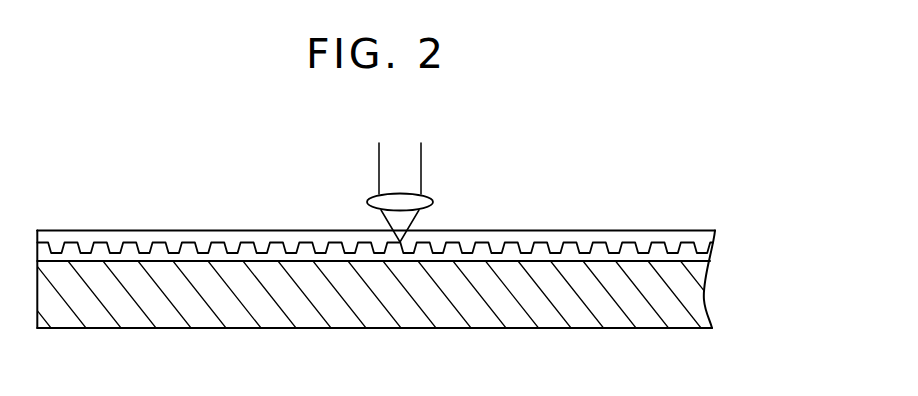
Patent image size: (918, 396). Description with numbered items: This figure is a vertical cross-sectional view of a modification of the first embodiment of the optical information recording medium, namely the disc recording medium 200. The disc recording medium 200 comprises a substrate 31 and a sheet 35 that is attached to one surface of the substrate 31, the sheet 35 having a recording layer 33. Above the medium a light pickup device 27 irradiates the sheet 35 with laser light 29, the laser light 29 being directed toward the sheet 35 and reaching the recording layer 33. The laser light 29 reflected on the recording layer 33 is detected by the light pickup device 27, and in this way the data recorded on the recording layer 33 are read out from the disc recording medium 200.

The disc recording medium 200 is at (522, 140).
The sheet 35 is at (103, 229).
The recording layer 33 is at (217, 234).
The substrate 31 is at (398, 302).
The light pickup device 27 is at (368, 192).
The laser light 29 is at (420, 223).